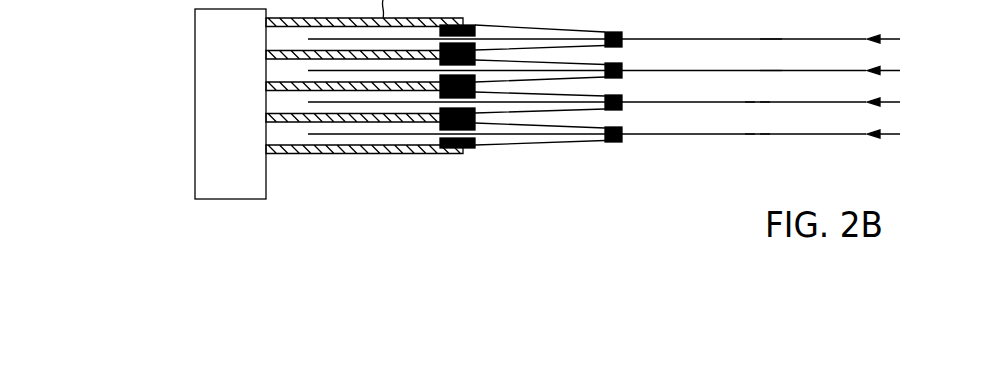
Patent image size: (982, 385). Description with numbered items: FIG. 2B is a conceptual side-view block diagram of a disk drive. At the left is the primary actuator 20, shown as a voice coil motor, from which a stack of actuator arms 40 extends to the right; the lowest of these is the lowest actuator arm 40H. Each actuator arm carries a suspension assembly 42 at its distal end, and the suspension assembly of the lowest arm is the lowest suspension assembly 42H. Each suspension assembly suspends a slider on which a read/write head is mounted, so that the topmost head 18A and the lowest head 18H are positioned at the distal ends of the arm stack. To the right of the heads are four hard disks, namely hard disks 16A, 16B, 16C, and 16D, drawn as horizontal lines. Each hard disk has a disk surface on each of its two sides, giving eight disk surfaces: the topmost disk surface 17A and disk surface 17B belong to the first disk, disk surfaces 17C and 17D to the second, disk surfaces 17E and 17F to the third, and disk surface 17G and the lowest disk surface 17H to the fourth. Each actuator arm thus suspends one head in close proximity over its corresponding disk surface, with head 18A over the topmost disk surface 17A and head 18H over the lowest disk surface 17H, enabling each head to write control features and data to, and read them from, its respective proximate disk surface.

The primary actuator 20 is at (195, 45).
The actuator arms 40 is at (375, 162).
The lowest actuator arm 40H is at (333, 154).
The suspension assembly 42 is at (573, 0).
The lowest suspension assembly 42H is at (557, 146).
The head 18A is at (623, 32).
The head 18H is at (625, 142).
The hard disk 16A is at (620, 39).
The hard disk 16B is at (620, 71).
The hard disk 16C is at (620, 102).
The hard disk 16D is at (620, 134).
The disk surface 17A is at (778, 38).
The disk surface 17B is at (765, 40).
The disk surface 17C is at (778, 70).
The disk surface 17D is at (765, 72).
The disk surface 17E is at (765, 101).
The disk surface 17F is at (750, 103).
The disk surface 17G is at (765, 133).
The disk surface 17H is at (750, 135).